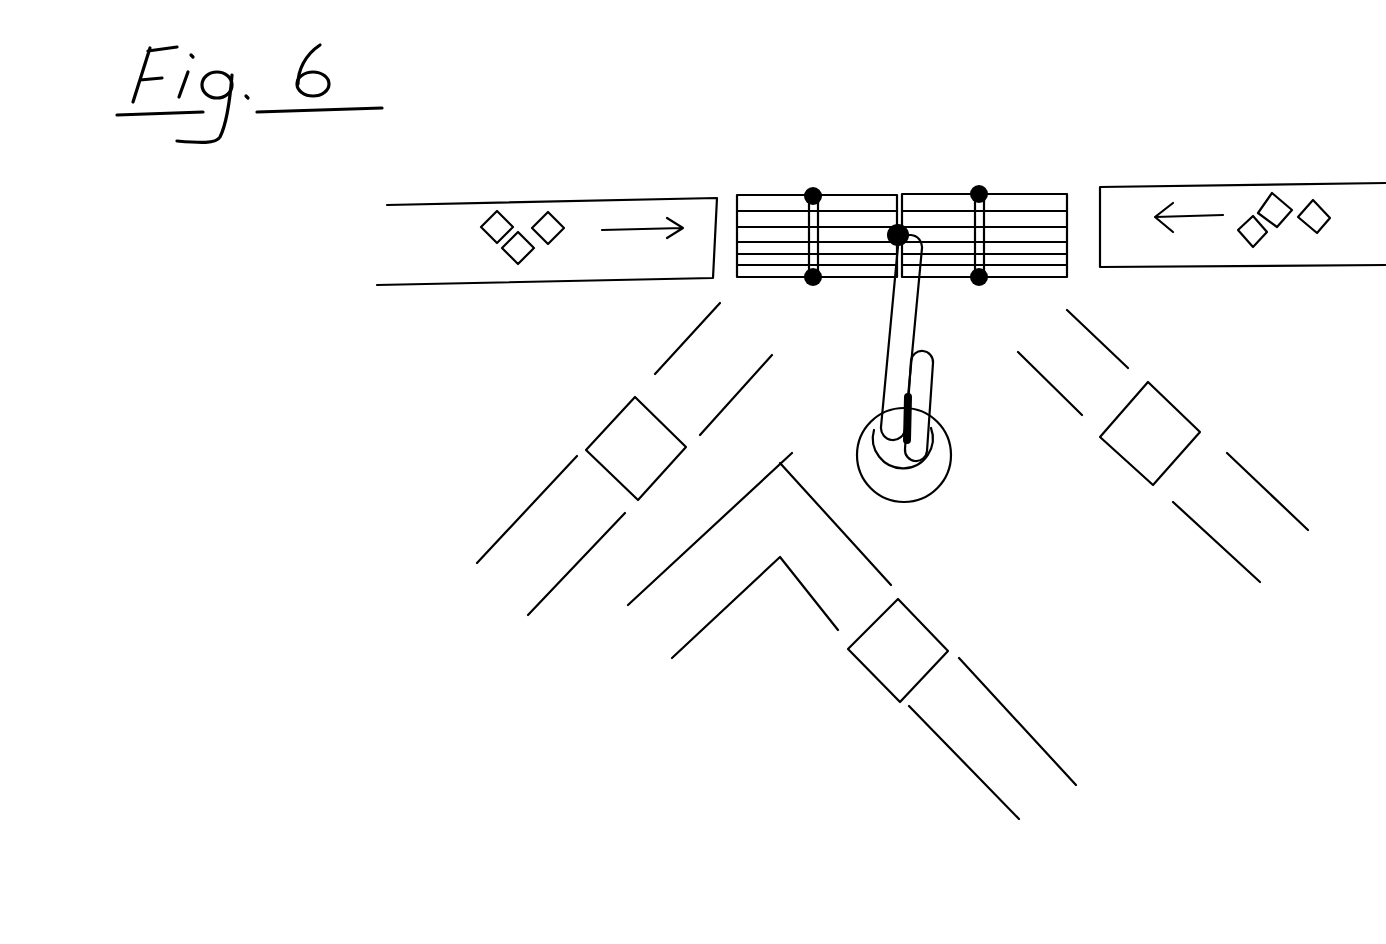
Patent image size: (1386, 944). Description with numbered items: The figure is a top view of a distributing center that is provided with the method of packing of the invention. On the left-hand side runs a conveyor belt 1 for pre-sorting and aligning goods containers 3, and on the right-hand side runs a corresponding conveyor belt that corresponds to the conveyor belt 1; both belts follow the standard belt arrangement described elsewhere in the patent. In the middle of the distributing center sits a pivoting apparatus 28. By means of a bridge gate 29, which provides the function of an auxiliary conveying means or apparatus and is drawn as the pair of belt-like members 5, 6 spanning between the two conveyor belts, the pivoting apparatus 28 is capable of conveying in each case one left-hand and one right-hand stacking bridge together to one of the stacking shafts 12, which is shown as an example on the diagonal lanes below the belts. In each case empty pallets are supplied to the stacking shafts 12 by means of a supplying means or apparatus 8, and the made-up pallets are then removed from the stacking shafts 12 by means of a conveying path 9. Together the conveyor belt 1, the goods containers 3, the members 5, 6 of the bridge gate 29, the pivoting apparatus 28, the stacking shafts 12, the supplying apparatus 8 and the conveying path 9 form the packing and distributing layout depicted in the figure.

The conveyor belt 1 is at (430, 248).
The goods containers 3 is at (496, 215).
The first roller conveyor section 5 is at (843, 196).
The second roller conveyor section 6 is at (937, 194).
The supplying apparatus 8 is at (1277, 792).
The conveying path 9 is at (822, 535).
The stacking shaft 12 is at (1143, 475).
The pivoting apparatus 28 is at (951, 474).
The bridge gate 29 is at (985, 198).